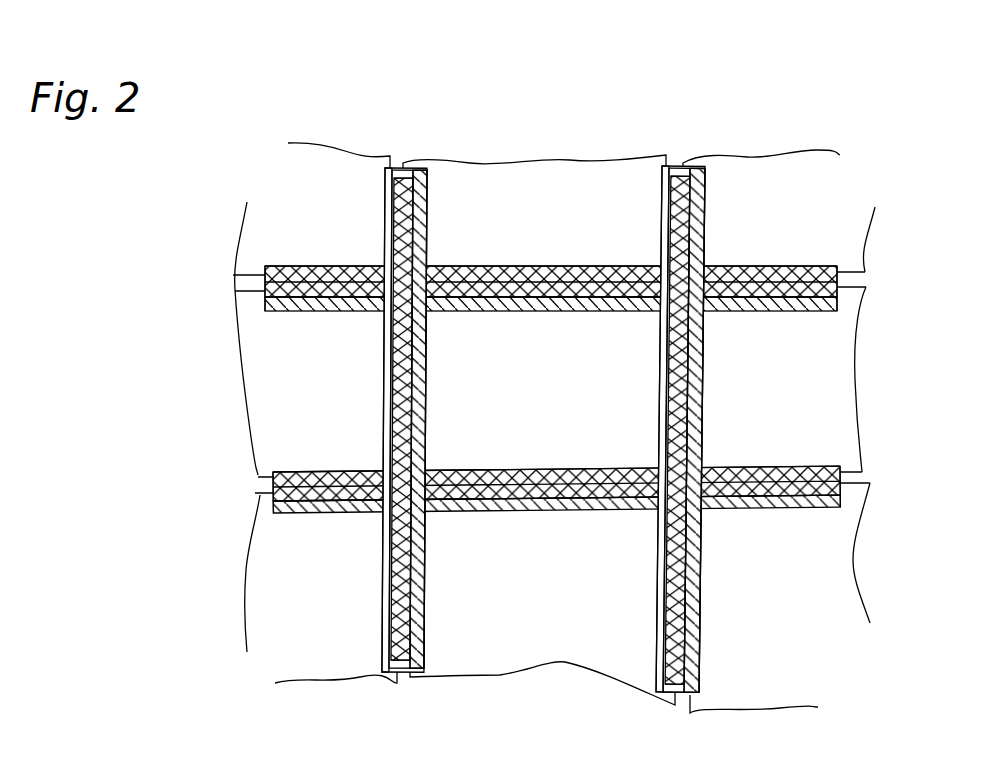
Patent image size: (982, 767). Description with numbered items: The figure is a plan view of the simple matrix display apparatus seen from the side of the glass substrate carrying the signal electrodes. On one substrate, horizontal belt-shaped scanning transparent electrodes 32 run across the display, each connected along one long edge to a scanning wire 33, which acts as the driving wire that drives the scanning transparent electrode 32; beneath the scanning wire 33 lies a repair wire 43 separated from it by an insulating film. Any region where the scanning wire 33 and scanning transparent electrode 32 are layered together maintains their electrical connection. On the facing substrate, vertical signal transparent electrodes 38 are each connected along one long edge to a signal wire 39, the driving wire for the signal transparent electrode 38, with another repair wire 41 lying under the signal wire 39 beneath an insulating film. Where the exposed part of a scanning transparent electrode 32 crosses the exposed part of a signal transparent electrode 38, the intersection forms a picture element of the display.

The scanning transparent electrode 32 is at (267, 405).
The scanning wire 33 is at (288, 308).
The signal transparent electrode 38 is at (568, 180).
The signal wire 39 is at (428, 207).
The repair wire 41 is at (420, 172).
The repair wire 43 is at (265, 298).